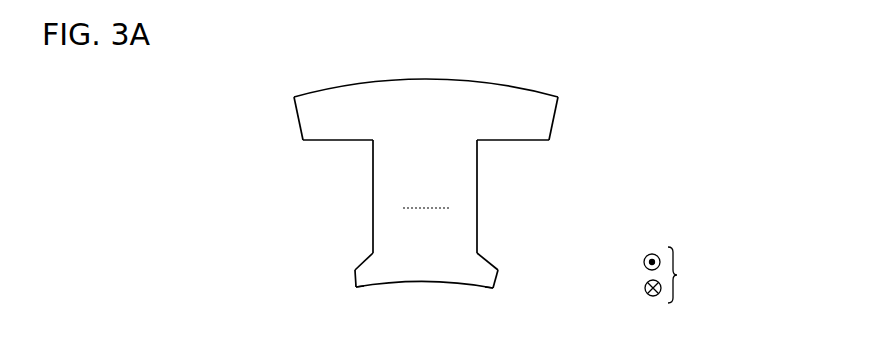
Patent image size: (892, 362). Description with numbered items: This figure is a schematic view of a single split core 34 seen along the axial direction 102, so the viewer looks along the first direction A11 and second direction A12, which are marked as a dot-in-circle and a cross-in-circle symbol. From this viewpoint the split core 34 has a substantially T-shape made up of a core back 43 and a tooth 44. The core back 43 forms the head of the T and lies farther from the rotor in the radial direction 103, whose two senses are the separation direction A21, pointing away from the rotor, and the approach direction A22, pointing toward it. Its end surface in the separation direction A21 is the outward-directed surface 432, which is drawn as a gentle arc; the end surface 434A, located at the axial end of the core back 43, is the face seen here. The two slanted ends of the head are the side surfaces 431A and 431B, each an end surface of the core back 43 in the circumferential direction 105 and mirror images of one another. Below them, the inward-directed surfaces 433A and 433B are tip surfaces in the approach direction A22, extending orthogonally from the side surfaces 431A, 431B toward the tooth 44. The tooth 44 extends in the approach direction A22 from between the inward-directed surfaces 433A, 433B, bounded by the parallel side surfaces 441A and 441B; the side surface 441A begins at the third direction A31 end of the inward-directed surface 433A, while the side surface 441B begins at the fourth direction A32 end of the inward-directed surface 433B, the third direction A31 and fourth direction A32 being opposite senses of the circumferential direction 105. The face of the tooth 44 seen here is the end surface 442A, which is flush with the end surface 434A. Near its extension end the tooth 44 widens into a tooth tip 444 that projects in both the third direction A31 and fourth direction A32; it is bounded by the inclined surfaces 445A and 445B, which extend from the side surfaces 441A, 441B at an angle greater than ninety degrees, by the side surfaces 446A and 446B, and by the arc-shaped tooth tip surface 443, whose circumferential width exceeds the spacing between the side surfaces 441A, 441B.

The split core 34 is at (505, 57).
The core back 43 is at (424, 108).
The outward-directed surface 432 is at (542, 92).
The end surface 434A is at (343, 102).
The side surface 431A is at (293, 107).
The side surface 431B is at (557, 112).
The inward-directed surface 433A is at (332, 140).
The inward-directed surface 433B is at (515, 143).
The tooth 44 is at (428, 236).
The side surface 441A is at (373, 203).
The side surface 441B is at (480, 207).
The end surface 442A is at (426, 196).
The tooth tip surface 443 is at (423, 282).
The tooth tip 444 is at (365, 289).
The inclined surface 445A is at (360, 257).
The inclined surface 445B is at (498, 256).
The side surface 446A is at (352, 283).
The side surface 446B is at (498, 280).
The third direction A31 is at (293, 200).
The fourth direction A32 is at (548, 195).
The circumferential direction 105 is at (427, 191).
The separation direction A21 is at (721, 91).
The approach direction A22 is at (716, 167).
The radial direction 103 is at (766, 155).
The first direction A11 is at (631, 263).
The second direction A12 is at (632, 289).
The axial direction 102 is at (660, 275).